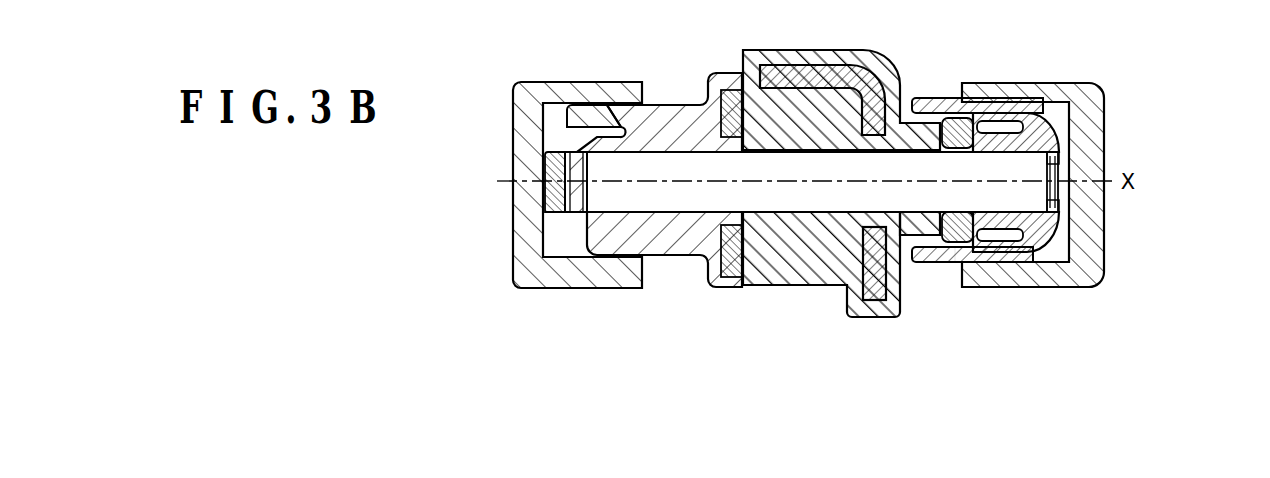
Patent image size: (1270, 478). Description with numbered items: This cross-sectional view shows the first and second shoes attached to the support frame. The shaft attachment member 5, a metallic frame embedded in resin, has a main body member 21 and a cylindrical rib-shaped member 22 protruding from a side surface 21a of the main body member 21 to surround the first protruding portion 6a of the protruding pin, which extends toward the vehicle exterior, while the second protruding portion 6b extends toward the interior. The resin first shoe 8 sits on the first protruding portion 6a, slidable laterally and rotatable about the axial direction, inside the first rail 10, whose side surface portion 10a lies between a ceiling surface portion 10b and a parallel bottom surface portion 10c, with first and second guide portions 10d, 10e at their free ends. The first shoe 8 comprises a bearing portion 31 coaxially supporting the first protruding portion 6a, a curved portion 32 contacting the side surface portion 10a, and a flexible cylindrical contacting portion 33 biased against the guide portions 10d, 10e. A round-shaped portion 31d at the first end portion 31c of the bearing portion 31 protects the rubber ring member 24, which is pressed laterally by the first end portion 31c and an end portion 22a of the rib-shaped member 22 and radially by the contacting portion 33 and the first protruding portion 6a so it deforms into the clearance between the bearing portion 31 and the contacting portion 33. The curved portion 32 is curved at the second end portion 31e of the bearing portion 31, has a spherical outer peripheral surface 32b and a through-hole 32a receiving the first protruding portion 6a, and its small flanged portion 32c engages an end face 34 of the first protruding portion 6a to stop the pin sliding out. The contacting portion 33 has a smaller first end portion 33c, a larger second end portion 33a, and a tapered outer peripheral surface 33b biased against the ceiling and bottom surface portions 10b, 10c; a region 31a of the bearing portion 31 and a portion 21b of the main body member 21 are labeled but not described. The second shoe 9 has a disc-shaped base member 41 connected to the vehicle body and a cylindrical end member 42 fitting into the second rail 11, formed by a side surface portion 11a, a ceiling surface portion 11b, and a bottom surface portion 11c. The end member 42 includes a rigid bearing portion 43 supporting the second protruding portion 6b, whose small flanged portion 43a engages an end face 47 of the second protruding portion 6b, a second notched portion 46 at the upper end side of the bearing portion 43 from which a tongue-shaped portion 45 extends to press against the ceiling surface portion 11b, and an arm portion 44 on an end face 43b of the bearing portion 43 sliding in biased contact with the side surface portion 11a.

The shaft attachment member 5 is at (819, 45).
The first protruding portion 6a is at (1103, 260).
The second protruding portion 6b is at (660, 205).
The first shoe 8 is at (922, 88).
The second shoe 9 is at (667, 79).
The first rail 10 is at (1109, 92).
The side surface portion 10a is at (1103, 232).
The ceiling surface portion 10b is at (1037, 83).
The bottom surface portion 10c is at (1086, 287).
The first guide portion 10d is at (945, 98).
The second guide portion 10e is at (957, 262).
The second rail 11 is at (511, 84).
The side surface portion 11a is at (513, 262).
The ceiling surface portion 11b is at (574, 82).
The bottom surface portion 11c is at (592, 288).
The main body member 21 is at (797, 285).
The side surface 21a is at (900, 90).
The bush projection 21b is at (735, 78).
The cylindrical rib-shaped member 22 is at (913, 223).
The end portion 22a is at (962, 210).
The ring member 24 is at (968, 110).
The bearing portion 31 is at (1018, 262).
The cup inner surface 31a is at (990, 153).
The first end portion 31c is at (947, 147).
The round-shaped portion 31d is at (938, 262).
The second end portion 31e is at (1103, 127).
The curved portion 32 is at (1103, 108).
The through-hole 32a is at (1103, 155).
The outer peripheral surface 32b is at (1058, 125).
The small flanged portion 32c is at (1103, 218).
The contacting portion 33 is at (1000, 262).
The second end portion 33a is at (913, 264).
The outer peripheral surface 33b is at (925, 262).
The first end portion 33c is at (1030, 255).
The end face 34 is at (1103, 194).
The base member 41 is at (730, 277).
The end member 42 is at (690, 268).
The bearing portion 43 is at (660, 115).
The small flanged portion 43a is at (588, 168).
The end face 43b is at (560, 257).
The arm portion 44 is at (543, 165).
The tongue-shaped portion 45 is at (573, 108).
The second notched portion 46 is at (568, 132).
The end face 47 is at (572, 215).